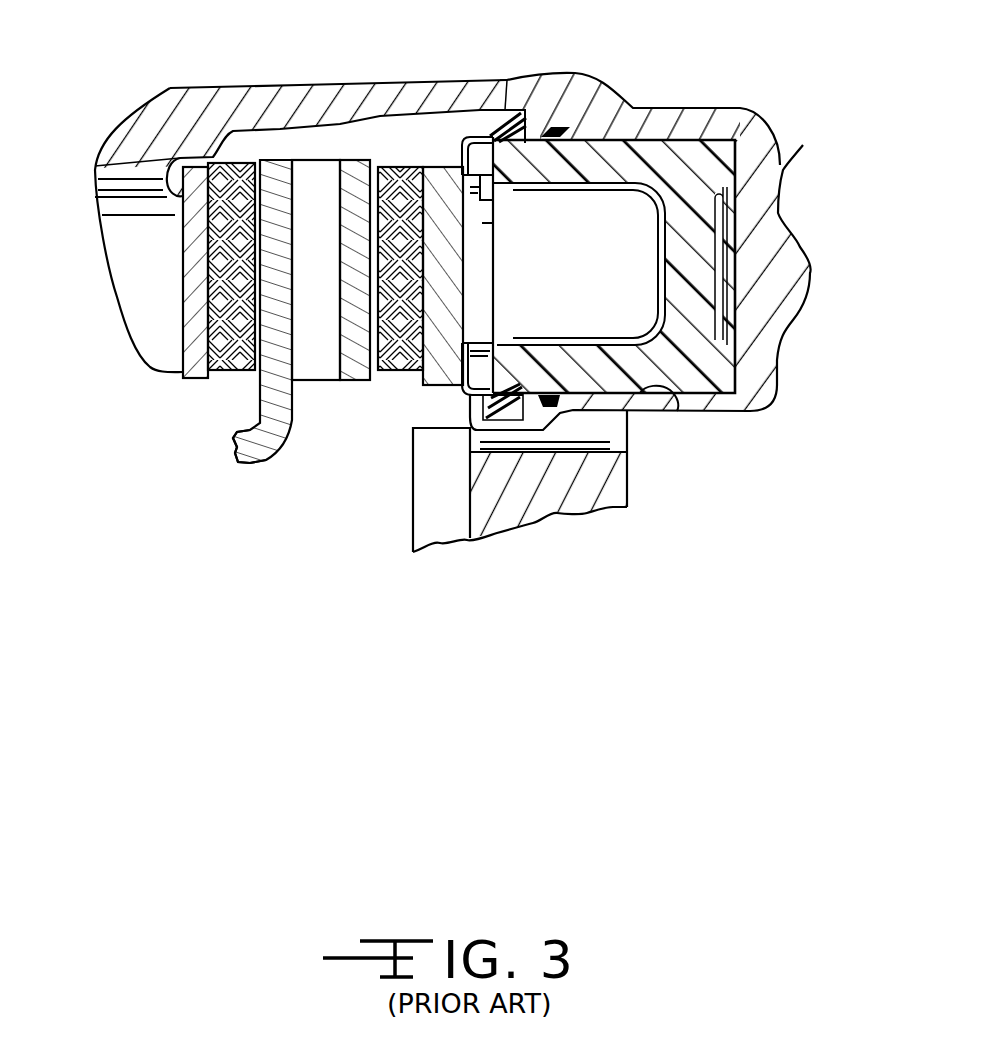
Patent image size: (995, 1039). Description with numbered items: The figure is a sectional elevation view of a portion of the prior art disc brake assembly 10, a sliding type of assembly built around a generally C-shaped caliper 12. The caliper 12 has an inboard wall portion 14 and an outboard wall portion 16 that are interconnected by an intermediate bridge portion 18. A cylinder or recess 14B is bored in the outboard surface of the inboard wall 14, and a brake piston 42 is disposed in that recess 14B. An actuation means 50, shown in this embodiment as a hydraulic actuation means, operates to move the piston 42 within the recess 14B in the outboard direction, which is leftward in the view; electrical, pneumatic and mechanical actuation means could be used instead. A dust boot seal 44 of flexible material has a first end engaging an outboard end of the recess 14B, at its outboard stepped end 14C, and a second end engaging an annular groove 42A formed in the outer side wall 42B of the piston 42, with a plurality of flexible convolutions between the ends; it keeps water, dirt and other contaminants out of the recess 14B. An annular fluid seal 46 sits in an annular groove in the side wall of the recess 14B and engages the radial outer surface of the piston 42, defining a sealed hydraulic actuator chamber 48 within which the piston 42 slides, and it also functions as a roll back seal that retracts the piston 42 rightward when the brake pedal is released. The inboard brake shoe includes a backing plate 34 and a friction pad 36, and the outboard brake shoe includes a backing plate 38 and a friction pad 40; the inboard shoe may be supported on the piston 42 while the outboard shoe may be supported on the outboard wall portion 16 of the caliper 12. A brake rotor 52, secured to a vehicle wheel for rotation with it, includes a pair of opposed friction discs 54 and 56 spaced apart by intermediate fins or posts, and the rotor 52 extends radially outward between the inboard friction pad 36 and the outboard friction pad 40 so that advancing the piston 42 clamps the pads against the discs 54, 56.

The disc brake assembly 10 is at (756, 88).
The caliper 12 is at (205, 86).
The inboard wall portion 14 is at (660, 122).
The recess 14B is at (677, 411).
The outboard stepped end 14C is at (485, 93).
The outboard wall portion 16 is at (128, 297).
The intermediate bridge portion 18 is at (500, 79).
The backing plate 34 is at (447, 165).
The friction pad 36 is at (405, 165).
The backing plate 38 is at (184, 378).
The friction pad 40 is at (224, 371).
The brake piston 42 is at (713, 358).
The annular groove 42A is at (520, 143).
The outer side wall 42B is at (587, 391).
The dust boot seal 44 is at (483, 397).
The fluid seal 46 is at (553, 403).
The hydraulic actuator chamber 48 is at (728, 218).
The actuation means 50 is at (807, 246).
The brake rotor 52 is at (272, 470).
The friction disc 54 is at (352, 158).
The friction disc 56 is at (268, 158).